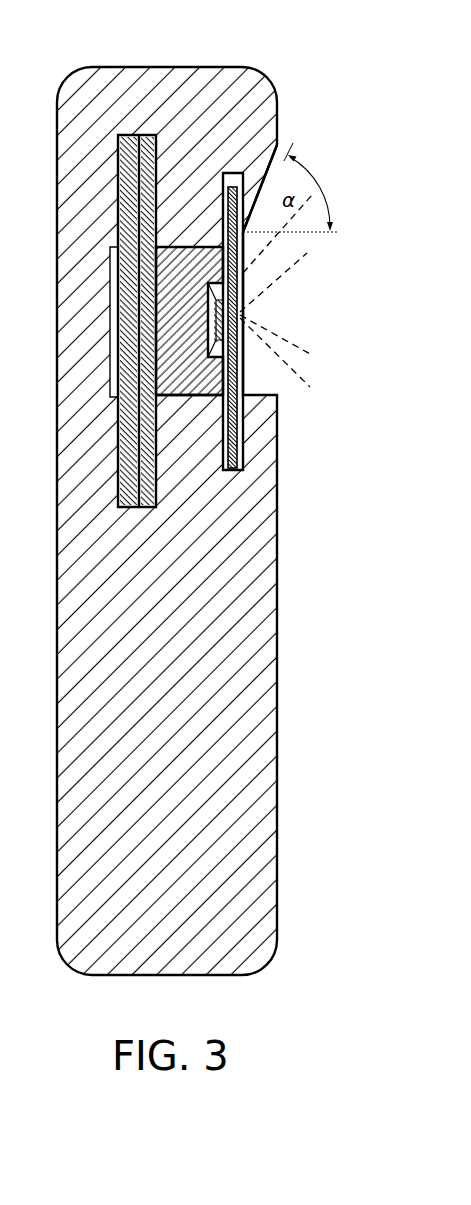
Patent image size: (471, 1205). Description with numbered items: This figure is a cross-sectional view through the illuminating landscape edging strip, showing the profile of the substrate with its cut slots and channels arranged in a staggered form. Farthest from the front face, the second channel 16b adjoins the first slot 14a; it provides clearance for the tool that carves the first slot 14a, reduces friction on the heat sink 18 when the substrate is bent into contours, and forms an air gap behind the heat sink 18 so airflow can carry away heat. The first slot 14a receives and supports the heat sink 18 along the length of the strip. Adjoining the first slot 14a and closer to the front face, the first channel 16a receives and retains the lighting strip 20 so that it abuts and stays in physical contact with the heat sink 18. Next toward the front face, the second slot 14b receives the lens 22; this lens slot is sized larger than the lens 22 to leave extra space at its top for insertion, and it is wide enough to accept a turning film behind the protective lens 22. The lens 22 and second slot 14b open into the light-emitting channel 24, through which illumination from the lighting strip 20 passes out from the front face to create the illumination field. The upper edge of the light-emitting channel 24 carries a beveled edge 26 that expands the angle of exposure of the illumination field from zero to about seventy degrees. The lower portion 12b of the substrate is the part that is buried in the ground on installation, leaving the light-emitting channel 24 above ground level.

The lower portion of the substrate 12b is at (53, 552).
The first slot 14a is at (130, 135).
The second slot 14b is at (230, 476).
The first channel 16a is at (183, 397).
The second channel 16b is at (110, 252).
The heat sink 18 is at (128, 449).
The lighting strip 20 is at (187, 287).
The lens 22 is at (237, 362).
The light-emitting channel 24 is at (265, 396).
The beveled edge 26 is at (268, 195).